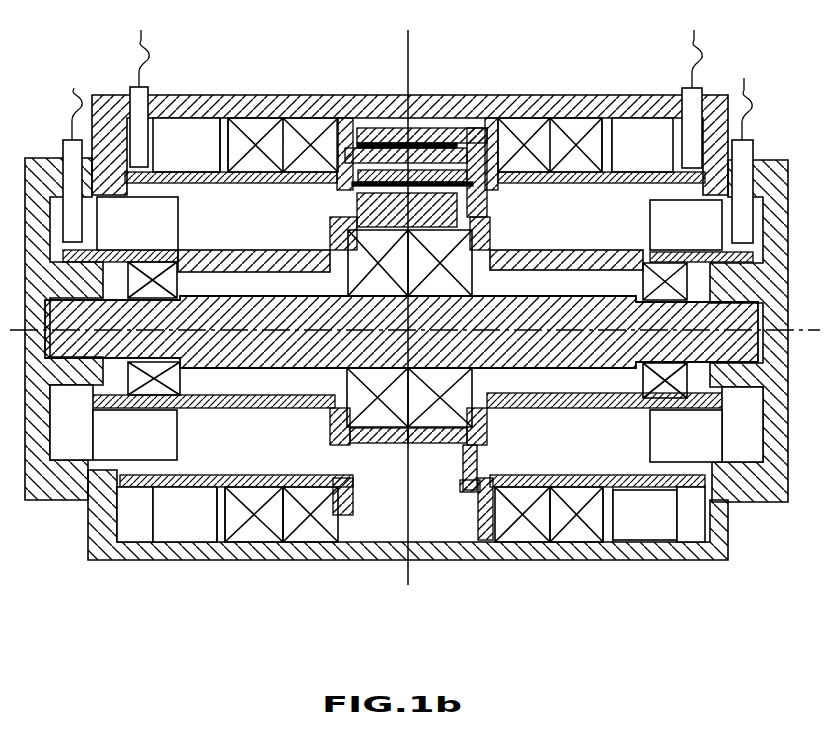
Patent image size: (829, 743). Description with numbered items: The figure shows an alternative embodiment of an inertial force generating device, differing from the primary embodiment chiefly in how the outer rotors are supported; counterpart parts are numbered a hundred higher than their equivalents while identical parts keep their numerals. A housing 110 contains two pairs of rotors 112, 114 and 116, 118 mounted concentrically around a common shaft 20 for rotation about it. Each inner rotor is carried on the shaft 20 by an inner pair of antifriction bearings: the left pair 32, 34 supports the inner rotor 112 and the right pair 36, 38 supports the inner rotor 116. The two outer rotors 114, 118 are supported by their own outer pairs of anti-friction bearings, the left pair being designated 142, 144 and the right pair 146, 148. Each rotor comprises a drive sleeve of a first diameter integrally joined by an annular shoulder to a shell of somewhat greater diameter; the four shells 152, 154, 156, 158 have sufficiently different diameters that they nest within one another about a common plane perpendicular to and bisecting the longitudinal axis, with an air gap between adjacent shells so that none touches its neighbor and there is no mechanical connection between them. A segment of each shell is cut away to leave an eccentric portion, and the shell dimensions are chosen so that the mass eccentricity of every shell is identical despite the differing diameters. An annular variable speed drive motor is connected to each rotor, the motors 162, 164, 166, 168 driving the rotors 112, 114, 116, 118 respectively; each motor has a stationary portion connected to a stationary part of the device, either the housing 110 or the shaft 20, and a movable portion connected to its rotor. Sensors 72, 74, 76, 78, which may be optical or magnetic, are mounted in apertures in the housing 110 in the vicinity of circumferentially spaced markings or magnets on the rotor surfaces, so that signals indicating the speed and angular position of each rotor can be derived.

The shaft 20 is at (572, 342).
The inner antifriction bearing 32 is at (76, 398).
The inner antifriction bearing 34 is at (362, 443).
The inner antifriction bearing 36 is at (438, 443).
The inner antifriction bearing 38 is at (732, 405).
The sensor 72 is at (64, 150).
The sensor 74 is at (148, 95).
The sensor 76 is at (753, 148).
The sensor 78 is at (682, 98).
The housing 110 is at (140, 560).
The inner rotor 112 is at (210, 250).
The outer rotor 114 is at (268, 183).
The inner rotor 116 is at (505, 250).
The outer rotor 118 is at (568, 185).
The outer anti-friction bearing 142 is at (253, 540).
The outer anti-friction bearing 144 is at (318, 540).
The outer anti-friction bearing 146 is at (522, 540).
The outer anti-friction bearing 148 is at (580, 540).
The shell 152 is at (340, 168).
The shell 154 is at (348, 100).
The shell 156 is at (498, 120).
The shell 158 is at (450, 100).
The variable speed drive motor 162 is at (144, 234).
The variable speed drive motor 164 is at (202, 157).
The variable speed drive motor 166 is at (695, 234).
The variable speed drive motor 168 is at (657, 157).